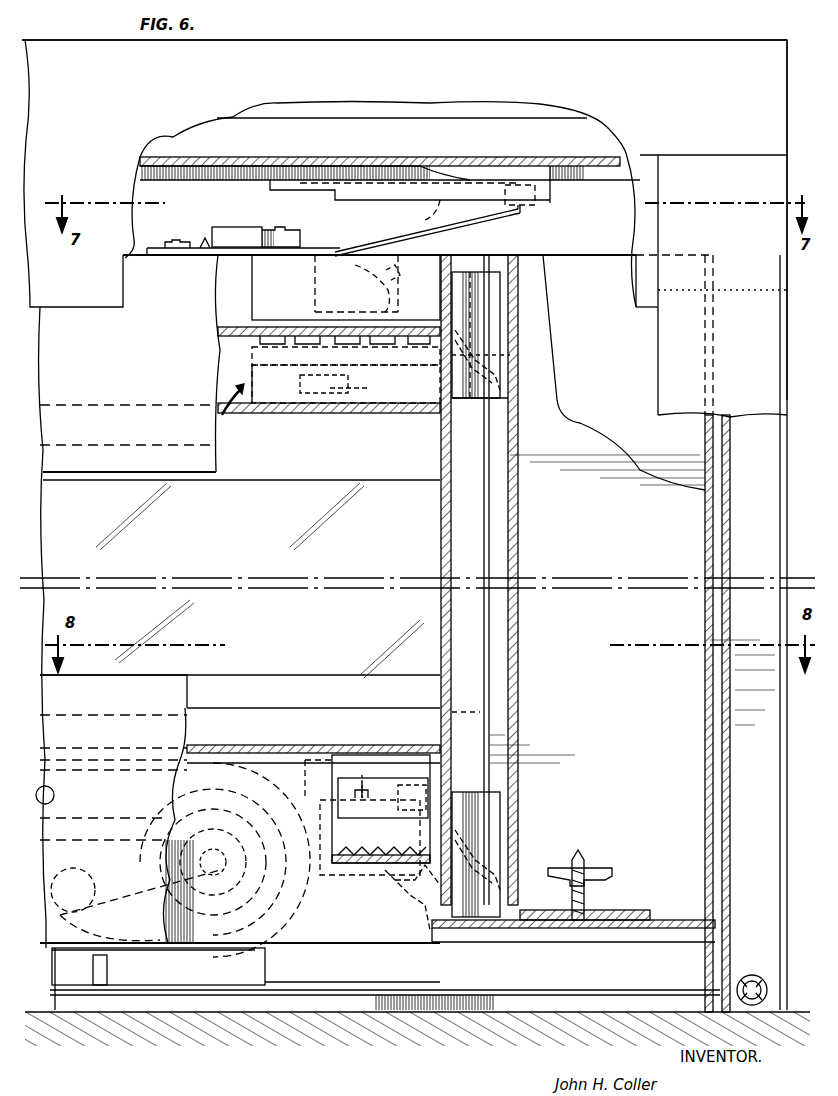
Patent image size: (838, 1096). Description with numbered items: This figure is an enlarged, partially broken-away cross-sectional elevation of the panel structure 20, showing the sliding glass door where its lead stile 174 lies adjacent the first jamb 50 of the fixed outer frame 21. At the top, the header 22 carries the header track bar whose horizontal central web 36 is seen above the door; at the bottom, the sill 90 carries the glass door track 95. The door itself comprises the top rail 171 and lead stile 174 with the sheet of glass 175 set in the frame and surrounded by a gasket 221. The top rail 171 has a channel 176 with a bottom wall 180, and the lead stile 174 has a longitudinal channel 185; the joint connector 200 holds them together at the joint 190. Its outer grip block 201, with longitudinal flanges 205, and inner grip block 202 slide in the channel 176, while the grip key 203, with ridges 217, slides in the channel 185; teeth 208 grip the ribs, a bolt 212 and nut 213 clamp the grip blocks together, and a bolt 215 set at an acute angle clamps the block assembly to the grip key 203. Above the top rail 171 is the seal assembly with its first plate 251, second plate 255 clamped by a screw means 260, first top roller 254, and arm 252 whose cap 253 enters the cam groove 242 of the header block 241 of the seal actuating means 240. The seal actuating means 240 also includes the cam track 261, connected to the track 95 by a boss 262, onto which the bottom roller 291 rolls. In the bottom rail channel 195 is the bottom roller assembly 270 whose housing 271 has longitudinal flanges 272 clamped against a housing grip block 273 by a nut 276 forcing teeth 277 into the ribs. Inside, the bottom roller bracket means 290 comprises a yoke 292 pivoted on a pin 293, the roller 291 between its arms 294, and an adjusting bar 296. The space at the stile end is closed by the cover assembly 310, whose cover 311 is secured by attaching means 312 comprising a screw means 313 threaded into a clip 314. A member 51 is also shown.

The panel structure 20 is at (130, 1072).
The fixed outer frame 21 is at (606, 35).
The header 22 is at (753, 32).
The horizontal central web 36 is at (500, 158).
The first jamb 50 is at (790, 985).
The frame member 51 is at (730, 826).
The sill 90 is at (375, 1002).
The glass door track 95 is at (60, 955).
The top rail 171 is at (152, 460).
The lead stile 174 is at (710, 458).
The sheet of glass 175 is at (420, 558).
The channel 176 is at (217, 420).
The bottom wall 180 is at (290, 414).
The longitudinal channel 185 is at (500, 714).
The joint 190 is at (423, 455).
The bottom rail channel 195 is at (312, 770).
The joint connector 200 is at (524, 253).
The outer grip block 201 is at (257, 298).
The inner grip block 202 is at (257, 370).
The grip key 203 is at (495, 297).
The longitudinal flanges 205 is at (347, 318).
The teeth 208 is at (280, 325).
The bolt 212 is at (360, 357).
The nut 213 is at (343, 414).
The bolt 215 is at (520, 355).
The ridges 217 is at (465, 395).
The gasket 221 is at (296, 477).
The seal actuating means 240 is at (286, 160).
The header block 241 is at (377, 168).
The cam groove 242 is at (432, 215).
The first plate 251 is at (148, 258).
The arm 252 is at (452, 232).
The cap 253 is at (535, 195).
The first top roller 254 is at (250, 233).
The second plate 255 is at (204, 238).
The screw means 260 is at (172, 241).
The cam track 261 is at (262, 958).
The boss 262 is at (100, 987).
The bottom roller assembly 270 is at (360, 655).
The housing 271 is at (292, 752).
The longitudinal flanges 272 is at (362, 862).
The housing grip block 273 is at (424, 783).
The nut 276 is at (376, 782).
The teeth 277 is at (412, 836).
The bottom roller bracket means 290 is at (208, 730).
The bottom roller 291 is at (280, 925).
The yoke 292 is at (178, 720).
The pin 293 is at (54, 795).
The arms 294 is at (104, 917).
The bar 296 is at (92, 880).
The cover assembly 310 is at (652, 868).
The cover 311 is at (660, 940).
The attaching means 312 is at (604, 832).
The screw means 313 is at (586, 895).
The clip 314 is at (600, 872).